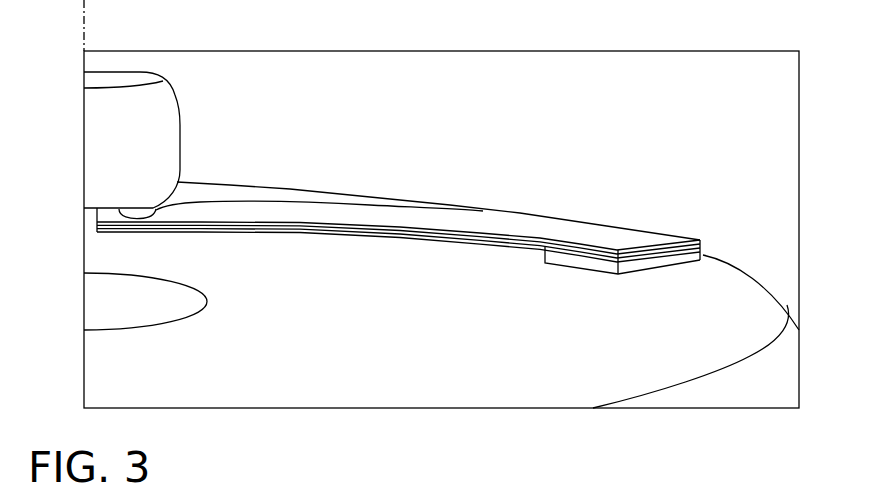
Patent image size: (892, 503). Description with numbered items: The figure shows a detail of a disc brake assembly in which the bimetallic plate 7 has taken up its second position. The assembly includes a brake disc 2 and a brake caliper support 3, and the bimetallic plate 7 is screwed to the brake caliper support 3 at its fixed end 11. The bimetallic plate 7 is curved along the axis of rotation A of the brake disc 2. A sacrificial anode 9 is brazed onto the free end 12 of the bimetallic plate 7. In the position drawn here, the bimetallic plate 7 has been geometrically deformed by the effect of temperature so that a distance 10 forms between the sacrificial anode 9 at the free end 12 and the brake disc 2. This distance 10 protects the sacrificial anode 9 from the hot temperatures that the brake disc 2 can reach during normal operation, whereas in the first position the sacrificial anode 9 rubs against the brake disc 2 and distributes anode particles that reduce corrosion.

The axis of rotation A is at (83, 34).
The brake disc 2 is at (738, 318).
The brake caliper support 3 is at (142, 113).
The bimetallic plate 7 is at (405, 217).
The sacrificial anode 9 is at (727, 240).
The distance 10 is at (580, 272).
The fixed end 11 is at (151, 217).
The free end 12 is at (632, 235).